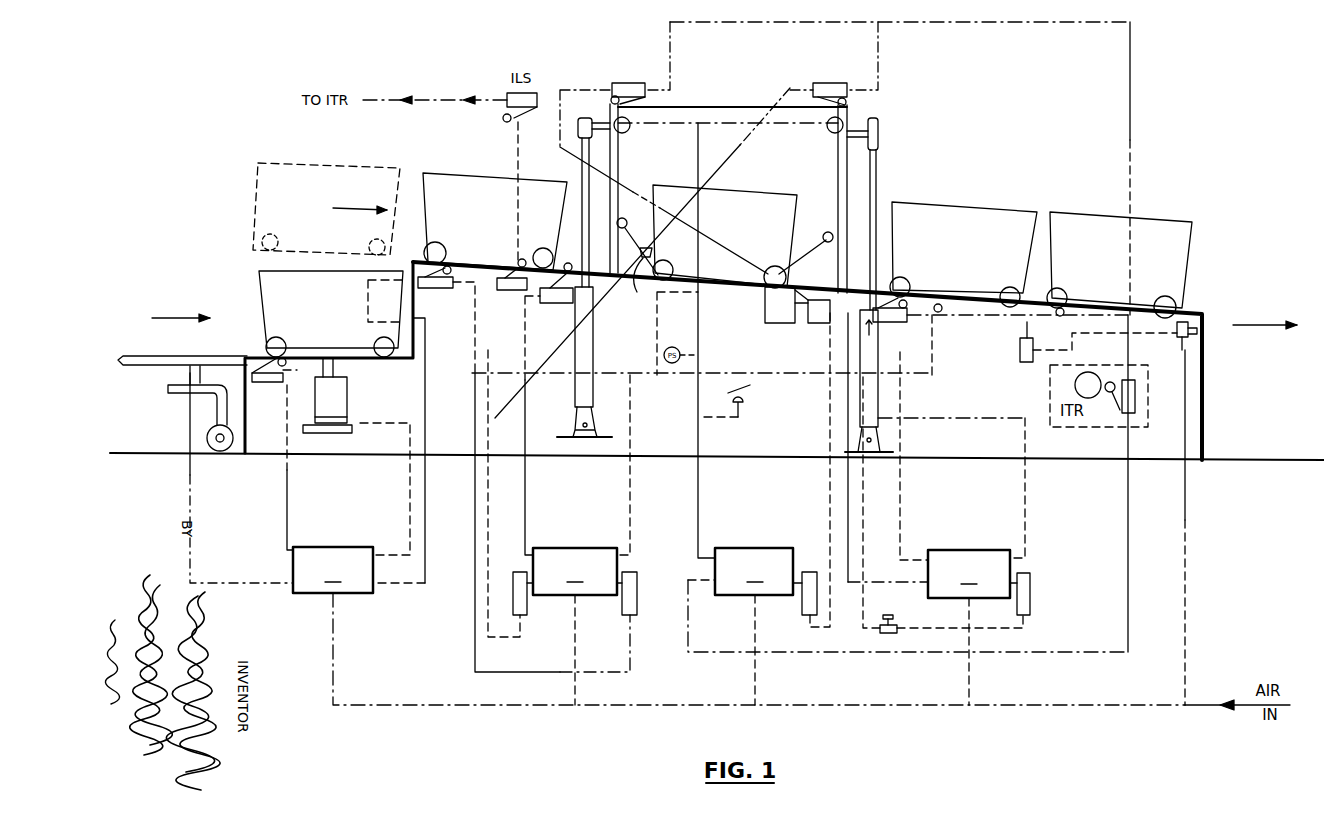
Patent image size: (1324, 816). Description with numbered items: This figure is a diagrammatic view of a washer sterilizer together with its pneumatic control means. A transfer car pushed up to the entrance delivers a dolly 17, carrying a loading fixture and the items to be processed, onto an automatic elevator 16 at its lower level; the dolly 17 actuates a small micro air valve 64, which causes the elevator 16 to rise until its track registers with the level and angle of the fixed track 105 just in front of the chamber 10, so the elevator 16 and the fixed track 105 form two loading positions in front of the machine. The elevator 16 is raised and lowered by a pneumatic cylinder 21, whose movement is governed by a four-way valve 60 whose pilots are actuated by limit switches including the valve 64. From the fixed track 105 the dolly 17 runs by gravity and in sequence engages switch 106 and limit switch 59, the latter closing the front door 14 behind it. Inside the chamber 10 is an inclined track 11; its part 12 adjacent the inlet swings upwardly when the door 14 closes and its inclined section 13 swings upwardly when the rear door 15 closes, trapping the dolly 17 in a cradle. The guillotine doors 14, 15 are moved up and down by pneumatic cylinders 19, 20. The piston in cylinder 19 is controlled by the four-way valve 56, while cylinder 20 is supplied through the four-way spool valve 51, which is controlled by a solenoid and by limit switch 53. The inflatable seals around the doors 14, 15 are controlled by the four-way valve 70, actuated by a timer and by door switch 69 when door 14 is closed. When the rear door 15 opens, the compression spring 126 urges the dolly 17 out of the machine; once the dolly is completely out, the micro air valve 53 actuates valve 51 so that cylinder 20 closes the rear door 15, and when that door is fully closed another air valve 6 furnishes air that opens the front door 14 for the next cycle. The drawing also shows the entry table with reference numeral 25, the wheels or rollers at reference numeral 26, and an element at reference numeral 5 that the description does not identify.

The switch 5 is at (1128, 396).
The limit switch 6 is at (830, 94).
The chamber 10 is at (763, 268).
The inclined track 11 is at (728, 290).
The part of the track 12 is at (637, 245).
The inclined section of the track 13 is at (824, 233).
The door 14 is at (618, 160).
The door 15 is at (847, 178).
The elevator 16 is at (328, 353).
The dolly 17 is at (311, 202).
The pneumatic cylinder 19 is at (593, 353).
The pneumatic cylinder 20 is at (878, 400).
The pneumatic cylinder 21 is at (340, 395).
The table 25 is at (153, 365).
The rollers 26 is at (278, 239).
The four-way valve 51 is at (979, 582).
The limit switch 53 is at (910, 322).
The four-way valve 56 is at (575, 581).
The limit switch 59 is at (553, 303).
The four-way valve 60 is at (333, 570).
The micro air valve 64 is at (263, 382).
The door switch 69 is at (625, 83).
The four-way valve 70 is at (766, 581).
The fixed track 105 is at (477, 268).
The switch 106 is at (518, 290).
The compression spring 126 is at (642, 286).